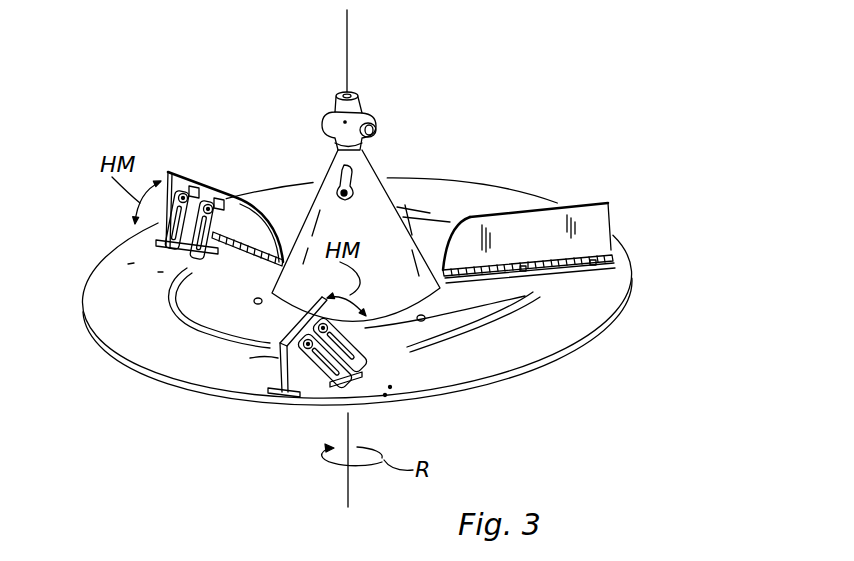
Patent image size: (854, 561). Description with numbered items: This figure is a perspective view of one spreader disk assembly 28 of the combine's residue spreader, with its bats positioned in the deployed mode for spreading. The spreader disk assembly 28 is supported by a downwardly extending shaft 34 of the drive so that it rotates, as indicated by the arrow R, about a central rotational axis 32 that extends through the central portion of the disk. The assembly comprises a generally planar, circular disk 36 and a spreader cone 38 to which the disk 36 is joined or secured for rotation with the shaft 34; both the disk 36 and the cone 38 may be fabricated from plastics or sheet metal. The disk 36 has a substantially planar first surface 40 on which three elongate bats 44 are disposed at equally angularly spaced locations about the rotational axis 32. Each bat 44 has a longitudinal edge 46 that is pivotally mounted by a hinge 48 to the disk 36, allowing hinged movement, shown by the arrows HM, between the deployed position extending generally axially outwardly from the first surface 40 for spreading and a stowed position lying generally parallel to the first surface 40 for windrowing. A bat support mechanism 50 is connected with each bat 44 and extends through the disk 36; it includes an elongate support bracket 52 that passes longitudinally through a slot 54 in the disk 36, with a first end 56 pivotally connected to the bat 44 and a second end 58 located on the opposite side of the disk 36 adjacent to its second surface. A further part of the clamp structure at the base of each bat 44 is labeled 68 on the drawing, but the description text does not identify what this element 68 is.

The blade 28 is at (503, 185).
The axis of rotation 32 is at (348, 492).
The hub coupling 34 is at (353, 92).
The disc rim 36 is at (614, 318).
The conical hub 38 is at (370, 157).
The rotating disc 40 is at (100, 293).
The blade holder plate 44 is at (172, 172).
The blade fastening strip 46 is at (464, 258).
The blade fastening strip 48 is at (252, 246).
The mounting bracket 50 is at (274, 321).
The mounting bracket 52 is at (165, 238).
The clamp arm 54 is at (296, 282).
The pivot bolt 56 is at (172, 208).
The clamp slot 58 is at (296, 282).
The clamp base 68 is at (296, 282).